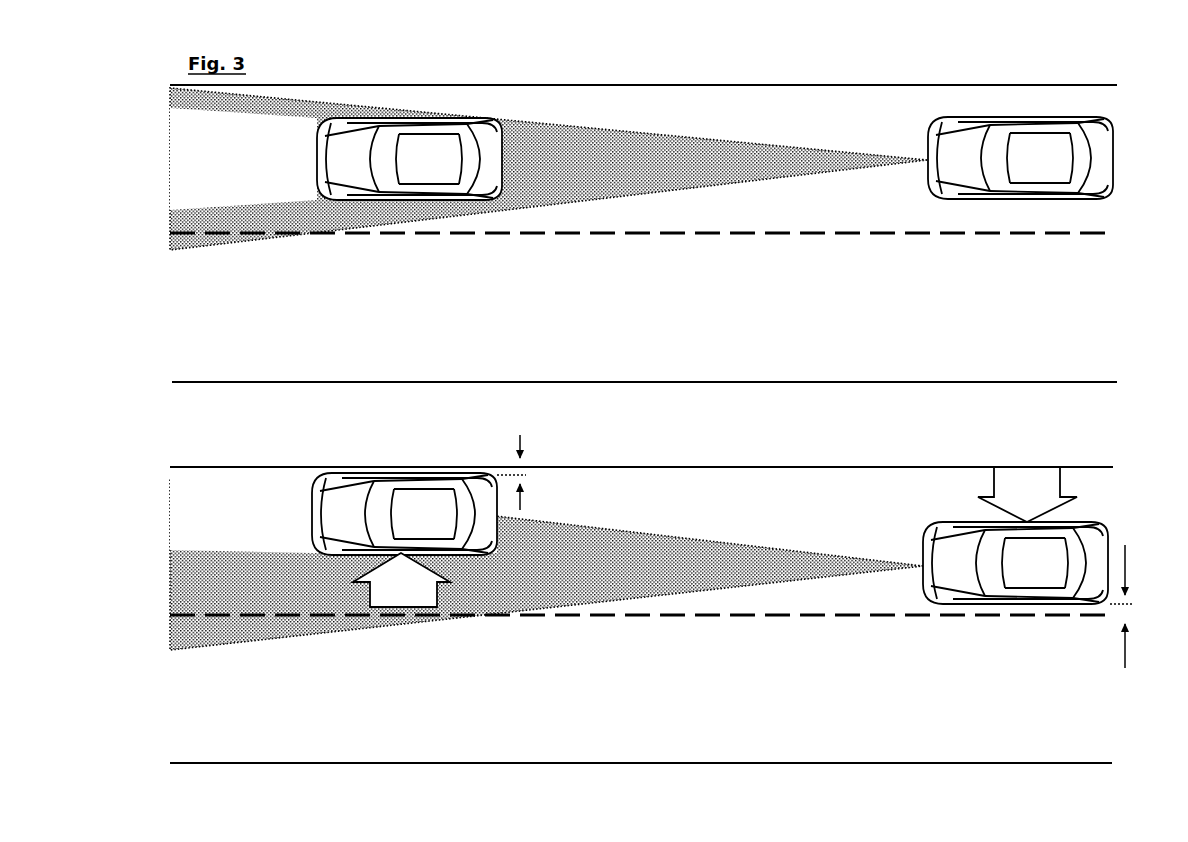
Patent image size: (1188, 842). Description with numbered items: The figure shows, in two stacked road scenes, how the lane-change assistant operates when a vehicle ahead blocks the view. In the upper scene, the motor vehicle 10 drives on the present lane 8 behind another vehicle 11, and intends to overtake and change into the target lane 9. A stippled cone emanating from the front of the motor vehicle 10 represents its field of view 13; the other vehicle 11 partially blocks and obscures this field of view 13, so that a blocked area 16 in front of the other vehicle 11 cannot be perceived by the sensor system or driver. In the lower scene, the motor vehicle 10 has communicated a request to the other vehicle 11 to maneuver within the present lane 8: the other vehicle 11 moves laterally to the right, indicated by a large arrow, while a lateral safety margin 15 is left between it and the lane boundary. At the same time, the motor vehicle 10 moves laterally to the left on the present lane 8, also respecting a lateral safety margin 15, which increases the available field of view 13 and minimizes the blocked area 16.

The present lane 8 is at (832, 128).
The target lane 9 is at (635, 328).
The motor vehicle 10 is at (930, 135).
The other vehicle 11 is at (317, 140).
The field of view 13 is at (591, 173).
The lateral safety margin 15 is at (533, 480).
The blocked area 16 is at (238, 189).